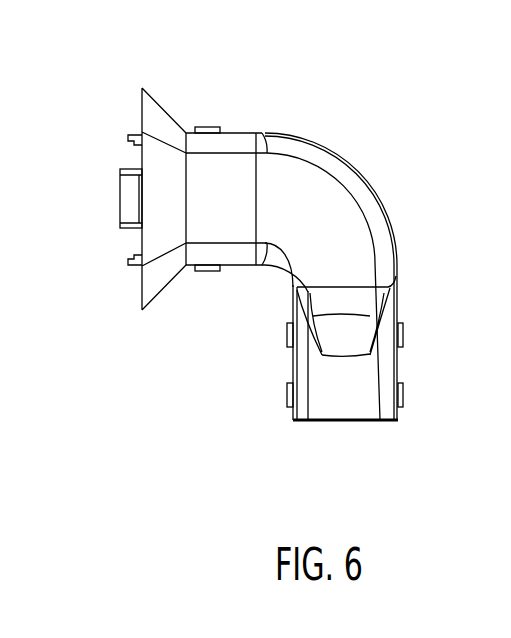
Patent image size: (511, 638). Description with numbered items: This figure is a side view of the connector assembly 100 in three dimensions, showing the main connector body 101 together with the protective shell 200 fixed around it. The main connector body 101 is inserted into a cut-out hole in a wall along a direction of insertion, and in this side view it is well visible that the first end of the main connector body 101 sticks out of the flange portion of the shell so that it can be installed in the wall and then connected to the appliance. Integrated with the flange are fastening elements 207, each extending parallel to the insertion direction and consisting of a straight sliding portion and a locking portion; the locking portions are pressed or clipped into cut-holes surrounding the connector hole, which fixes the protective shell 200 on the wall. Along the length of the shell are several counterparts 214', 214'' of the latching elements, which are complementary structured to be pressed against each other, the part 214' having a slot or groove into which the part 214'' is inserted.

The connector assembly 100 is at (146, 171).
The main connector body 101 is at (113, 219).
The protective shell 200 is at (383, 290).
The fastening element 207 is at (127, 262).
The counterpart of latching element 214' is at (450, 389).
The counterpart of latching element 214'' is at (346, 403).